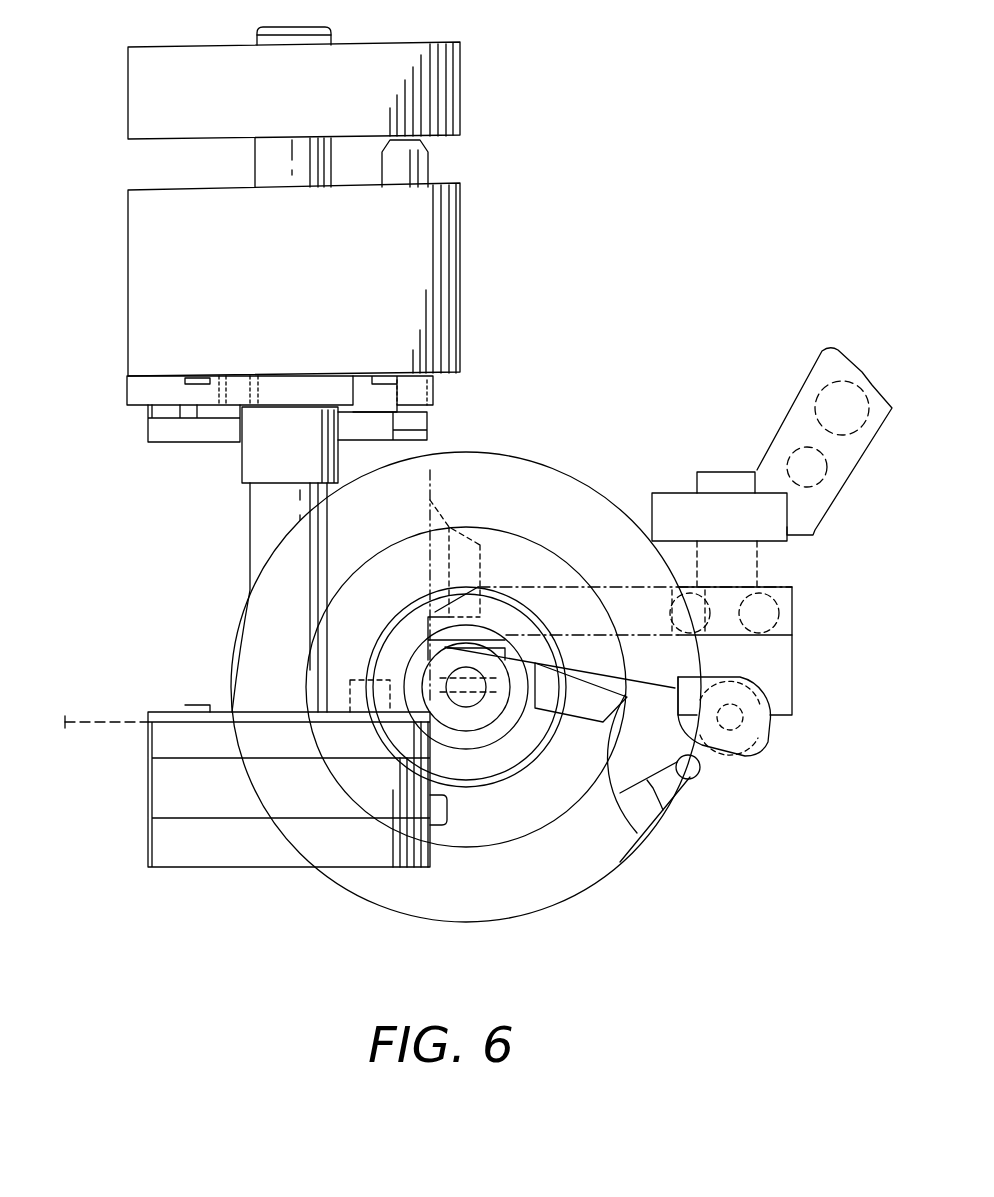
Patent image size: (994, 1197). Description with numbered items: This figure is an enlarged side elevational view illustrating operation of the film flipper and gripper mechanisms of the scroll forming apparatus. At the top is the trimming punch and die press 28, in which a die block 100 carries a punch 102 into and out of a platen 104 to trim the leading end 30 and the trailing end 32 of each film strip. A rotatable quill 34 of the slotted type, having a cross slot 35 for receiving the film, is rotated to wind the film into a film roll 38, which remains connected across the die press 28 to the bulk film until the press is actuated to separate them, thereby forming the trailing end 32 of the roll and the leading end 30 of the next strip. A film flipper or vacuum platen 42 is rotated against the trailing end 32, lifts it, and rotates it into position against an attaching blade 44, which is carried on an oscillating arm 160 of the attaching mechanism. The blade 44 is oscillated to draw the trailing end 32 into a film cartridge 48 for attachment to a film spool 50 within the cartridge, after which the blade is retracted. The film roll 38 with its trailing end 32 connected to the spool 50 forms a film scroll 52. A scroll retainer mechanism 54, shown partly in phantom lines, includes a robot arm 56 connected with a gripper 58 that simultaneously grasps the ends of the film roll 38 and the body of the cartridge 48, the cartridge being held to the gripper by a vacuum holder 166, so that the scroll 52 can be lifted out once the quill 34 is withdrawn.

The die block 100 is at (128, 345).
The trimming punch and die press 28 is at (122, 400).
The punch 102 is at (215, 418).
The platen 104 is at (165, 712).
The leading end 30 is at (78, 720).
The trailing end 32 is at (268, 712).
The quill 34 is at (468, 707).
The cross slot 35 is at (420, 718).
The film roll 38 is at (488, 705).
The film flipper or vacuum platen 42 is at (352, 676).
The attaching blade 44 is at (630, 712).
The film cartridge 48 is at (770, 735).
The film spool 50 is at (745, 753).
The film scroll 52 is at (652, 660).
The scroll retainer mechanism 54 is at (700, 472).
The robot arm 56 is at (780, 420).
The gripper 58 is at (793, 630).
The oscillating arm 160 is at (680, 780).
The vacuum holder 166 is at (793, 672).